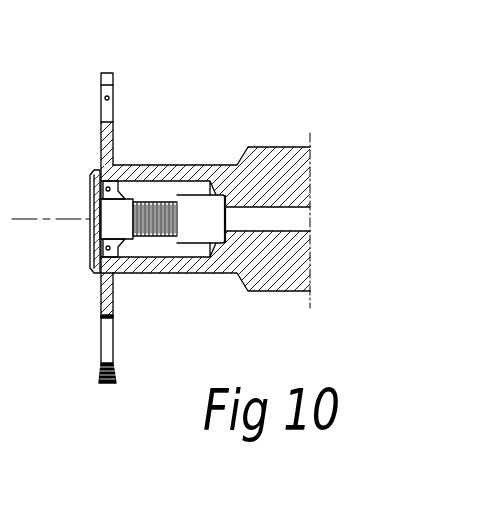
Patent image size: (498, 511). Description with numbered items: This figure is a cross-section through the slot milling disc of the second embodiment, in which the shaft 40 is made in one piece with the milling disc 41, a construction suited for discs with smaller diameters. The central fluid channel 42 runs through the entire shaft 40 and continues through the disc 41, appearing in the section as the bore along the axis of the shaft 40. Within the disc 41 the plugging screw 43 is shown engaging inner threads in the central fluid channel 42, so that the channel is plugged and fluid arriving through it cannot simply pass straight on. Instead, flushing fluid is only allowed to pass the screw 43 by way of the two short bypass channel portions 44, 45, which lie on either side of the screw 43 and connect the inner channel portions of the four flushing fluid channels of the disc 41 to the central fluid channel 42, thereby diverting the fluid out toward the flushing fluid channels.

The shaft 40 is at (278, 158).
The milling disc 41 is at (107, 338).
The central fluid channel 42 is at (288, 222).
The plugging screw 43 is at (107, 213).
The bypass channel portion 44 is at (158, 185).
The bypass channel portion 45 is at (153, 252).